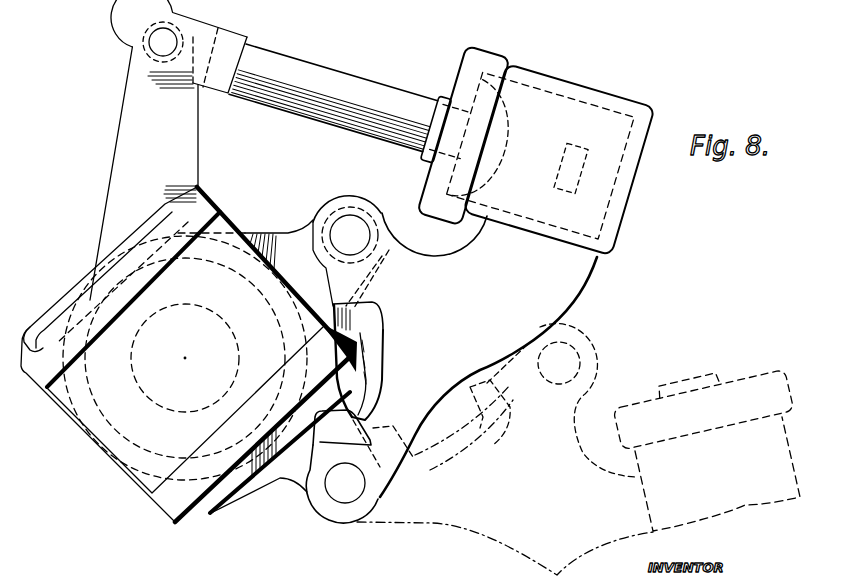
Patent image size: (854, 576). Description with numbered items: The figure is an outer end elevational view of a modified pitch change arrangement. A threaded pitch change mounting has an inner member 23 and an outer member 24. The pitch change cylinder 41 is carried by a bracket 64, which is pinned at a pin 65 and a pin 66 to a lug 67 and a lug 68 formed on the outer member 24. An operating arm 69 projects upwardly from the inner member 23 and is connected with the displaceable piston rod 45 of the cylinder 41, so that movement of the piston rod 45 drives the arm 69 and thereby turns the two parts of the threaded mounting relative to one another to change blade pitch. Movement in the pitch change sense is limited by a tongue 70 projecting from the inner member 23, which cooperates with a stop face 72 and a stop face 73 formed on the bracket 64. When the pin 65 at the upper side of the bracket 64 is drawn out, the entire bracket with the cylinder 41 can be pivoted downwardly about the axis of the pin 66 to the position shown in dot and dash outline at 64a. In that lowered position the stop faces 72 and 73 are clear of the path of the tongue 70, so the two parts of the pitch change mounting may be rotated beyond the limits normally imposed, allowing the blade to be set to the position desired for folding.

The inner member 23 is at (238, 339).
The outer member 24 is at (249, 233).
The pitch change cylinder 41 is at (622, 75).
The piston rod 45 is at (348, 76).
The bracket 64 is at (556, 284).
The bracket in pivoted position 64a is at (493, 535).
The pin 65 is at (353, 219).
The pin 66 is at (347, 496).
The lug 67 is at (311, 228).
The lug 68 is at (305, 495).
The operating arm 69 is at (130, 126).
The tongue 70 is at (380, 363).
The stop face 72 is at (362, 304).
The stop face 73 is at (313, 408).